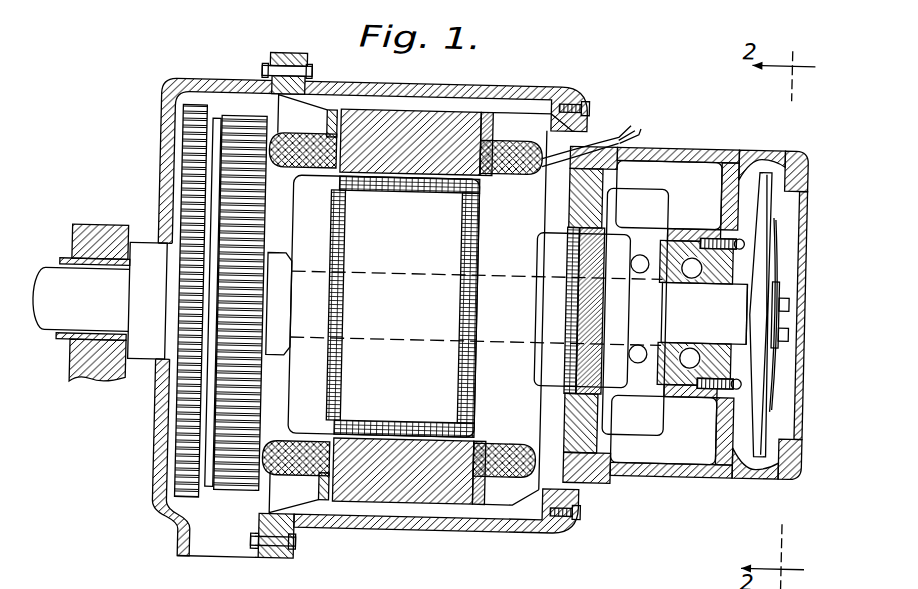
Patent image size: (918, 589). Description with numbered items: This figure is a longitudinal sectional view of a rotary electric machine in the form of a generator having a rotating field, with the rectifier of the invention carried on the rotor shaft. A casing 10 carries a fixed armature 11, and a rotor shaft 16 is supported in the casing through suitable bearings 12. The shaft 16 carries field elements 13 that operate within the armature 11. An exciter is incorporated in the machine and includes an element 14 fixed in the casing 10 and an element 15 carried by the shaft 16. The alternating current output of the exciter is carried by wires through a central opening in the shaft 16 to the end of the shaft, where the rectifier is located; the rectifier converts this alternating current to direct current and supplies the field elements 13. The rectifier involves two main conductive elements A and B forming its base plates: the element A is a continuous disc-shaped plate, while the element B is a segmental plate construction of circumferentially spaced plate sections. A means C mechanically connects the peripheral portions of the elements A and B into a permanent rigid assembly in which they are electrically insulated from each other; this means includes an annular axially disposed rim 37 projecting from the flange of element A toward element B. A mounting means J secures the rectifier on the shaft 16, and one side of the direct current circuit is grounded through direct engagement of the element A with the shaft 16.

The casing 10 is at (418, 79).
The fixed armature 11 is at (464, 104).
The bearings 12 is at (670, 380).
The field elements 13 is at (470, 371).
The exciter element 14 is at (603, 201).
The exciter element 15 is at (610, 373).
The shaft 16 is at (704, 313).
The main conductive element A is at (746, 286).
The main conductive element B is at (783, 232).
The connecting means C is at (766, 155).
The mounting means J is at (795, 324).
The annular rim 37 is at (749, 465).